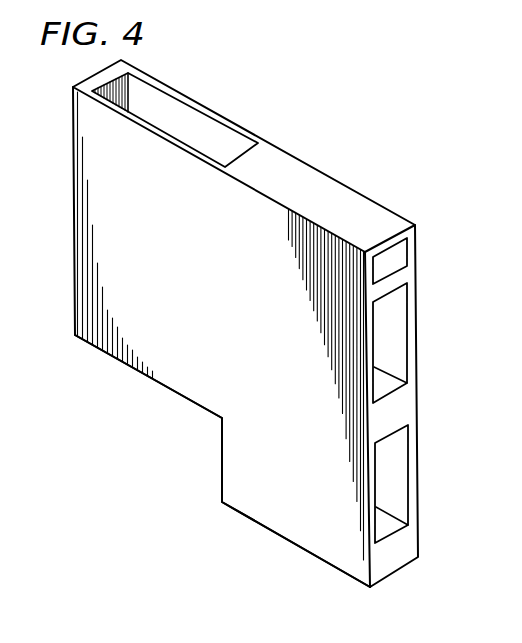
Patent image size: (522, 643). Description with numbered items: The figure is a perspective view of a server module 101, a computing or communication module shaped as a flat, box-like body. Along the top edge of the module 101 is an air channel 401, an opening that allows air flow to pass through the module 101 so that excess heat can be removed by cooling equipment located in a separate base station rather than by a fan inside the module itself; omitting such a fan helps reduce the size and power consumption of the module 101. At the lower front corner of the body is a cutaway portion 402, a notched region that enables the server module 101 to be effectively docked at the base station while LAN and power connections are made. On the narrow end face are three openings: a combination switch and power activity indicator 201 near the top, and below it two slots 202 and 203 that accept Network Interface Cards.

The server module 101 is at (337, 143).
The air channel 401 is at (192, 105).
The cutaway portion 402 is at (200, 427).
The combination switch and power activity indicator 201 is at (402, 252).
The slot 202 is at (408, 335).
The slot 203 is at (410, 475).